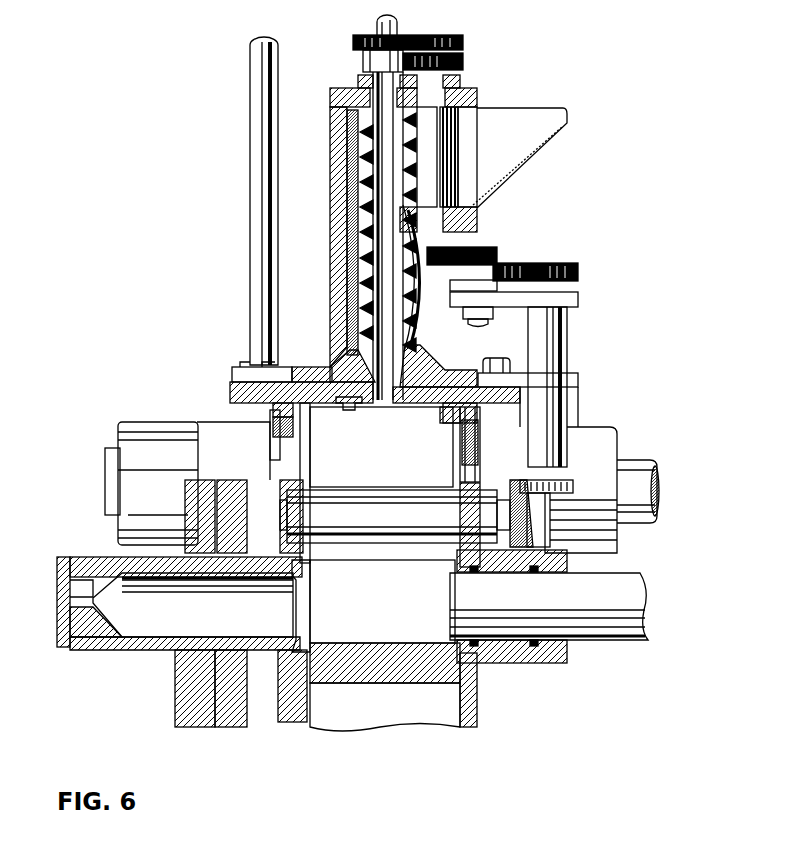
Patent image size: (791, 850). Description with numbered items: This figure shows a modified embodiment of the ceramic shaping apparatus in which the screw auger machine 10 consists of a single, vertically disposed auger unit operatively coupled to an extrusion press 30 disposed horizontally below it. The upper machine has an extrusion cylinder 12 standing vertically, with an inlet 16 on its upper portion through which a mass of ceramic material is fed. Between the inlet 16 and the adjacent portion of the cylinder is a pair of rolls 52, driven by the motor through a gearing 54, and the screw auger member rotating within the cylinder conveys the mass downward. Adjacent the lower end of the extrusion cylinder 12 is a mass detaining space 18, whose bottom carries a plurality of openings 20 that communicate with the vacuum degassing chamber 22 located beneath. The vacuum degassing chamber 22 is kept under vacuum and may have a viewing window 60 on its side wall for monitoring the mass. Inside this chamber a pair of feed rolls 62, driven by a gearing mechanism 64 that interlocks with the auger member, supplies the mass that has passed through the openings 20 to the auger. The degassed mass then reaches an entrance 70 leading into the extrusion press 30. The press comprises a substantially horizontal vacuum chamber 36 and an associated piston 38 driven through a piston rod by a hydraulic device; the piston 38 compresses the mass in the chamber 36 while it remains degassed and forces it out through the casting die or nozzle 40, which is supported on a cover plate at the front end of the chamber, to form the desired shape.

The screw auger machine 10 is at (323, 283).
The extrusion cylinder 12 is at (340, 334).
The inlet 16 is at (525, 152).
The mass detaining space 18 is at (416, 376).
The openings 20 is at (350, 410).
The vacuum degassing chamber 22 is at (390, 523).
The extrusion press 30 is at (125, 641).
The vacuum chamber 36 is at (193, 605).
The piston 38 is at (587, 607).
The casting die or nozzle 40 is at (86, 608).
The pair of rolls 52 is at (433, 145).
The gearing 54 is at (465, 60).
The viewing window 60 is at (293, 452).
The feed rolls 62 is at (380, 522).
The gearing mechanism 64 is at (572, 480).
The entrance 70 is at (302, 606).